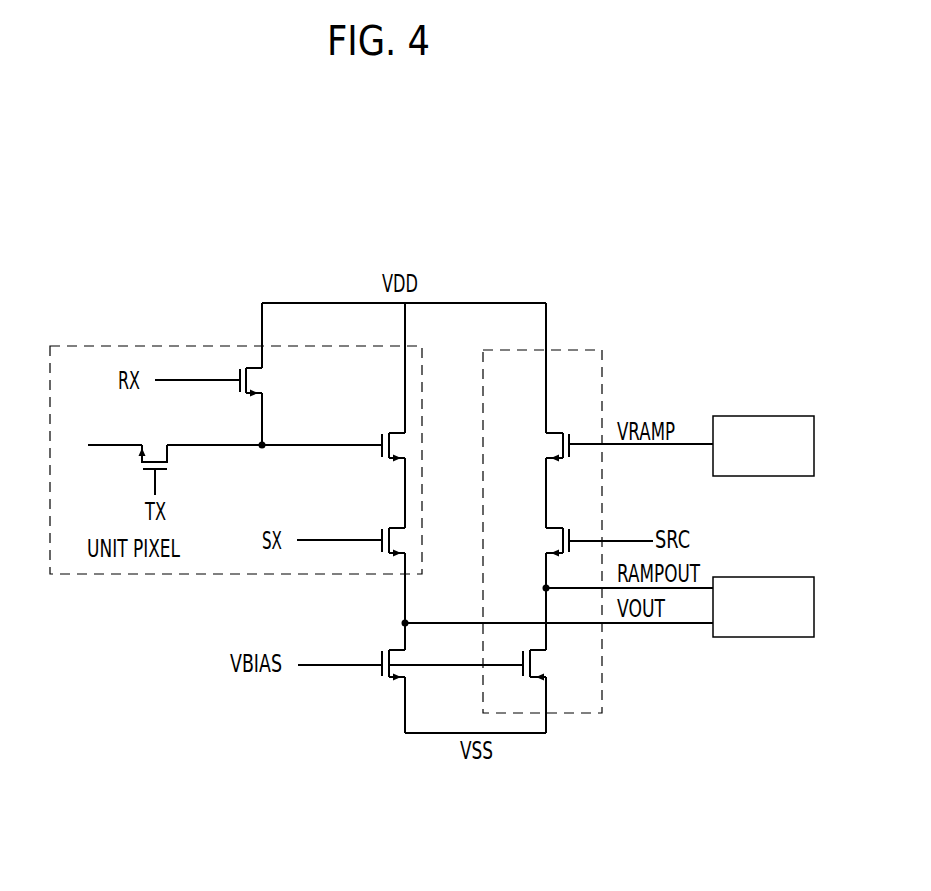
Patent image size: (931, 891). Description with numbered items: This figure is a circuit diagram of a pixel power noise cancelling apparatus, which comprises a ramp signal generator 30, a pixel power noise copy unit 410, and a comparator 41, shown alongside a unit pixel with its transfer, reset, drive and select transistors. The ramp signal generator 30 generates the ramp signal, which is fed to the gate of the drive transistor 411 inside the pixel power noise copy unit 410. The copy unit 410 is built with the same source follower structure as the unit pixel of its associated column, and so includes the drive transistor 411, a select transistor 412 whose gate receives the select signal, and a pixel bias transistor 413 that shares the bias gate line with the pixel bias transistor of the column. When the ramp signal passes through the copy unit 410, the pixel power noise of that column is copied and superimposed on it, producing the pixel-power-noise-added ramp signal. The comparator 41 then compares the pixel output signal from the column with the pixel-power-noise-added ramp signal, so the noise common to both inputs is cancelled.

The pixel power noise copy unit 410 is at (603, 372).
The drive transistor 411 is at (551, 445).
The select transistor 412 is at (551, 540).
The pixel bias transistor 413 is at (536, 666).
The ramp signal generator 30 is at (787, 413).
The comparator 41 is at (787, 576).